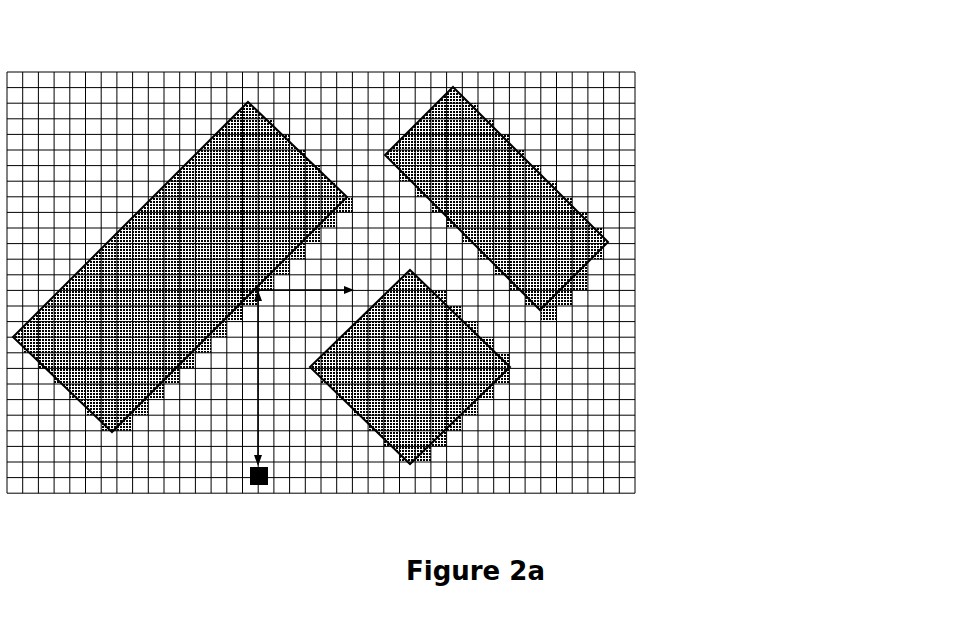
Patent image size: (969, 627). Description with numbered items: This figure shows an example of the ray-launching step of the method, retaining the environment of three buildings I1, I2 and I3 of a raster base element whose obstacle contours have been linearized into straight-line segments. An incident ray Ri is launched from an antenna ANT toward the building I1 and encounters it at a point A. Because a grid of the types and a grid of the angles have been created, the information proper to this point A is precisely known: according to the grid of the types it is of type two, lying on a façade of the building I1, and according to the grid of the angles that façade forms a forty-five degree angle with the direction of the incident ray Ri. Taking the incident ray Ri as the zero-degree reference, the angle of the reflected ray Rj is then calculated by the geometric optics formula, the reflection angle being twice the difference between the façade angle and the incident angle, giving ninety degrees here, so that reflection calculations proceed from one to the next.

The building I1 is at (207, 178).
The building I2 is at (474, 137).
The building I3 is at (468, 375).
The antenna ANT is at (259, 485).
The incident ray Ri is at (256, 400).
The distance/vector along interference region boundary Rj is at (325, 288).
The point A is at (256, 289).